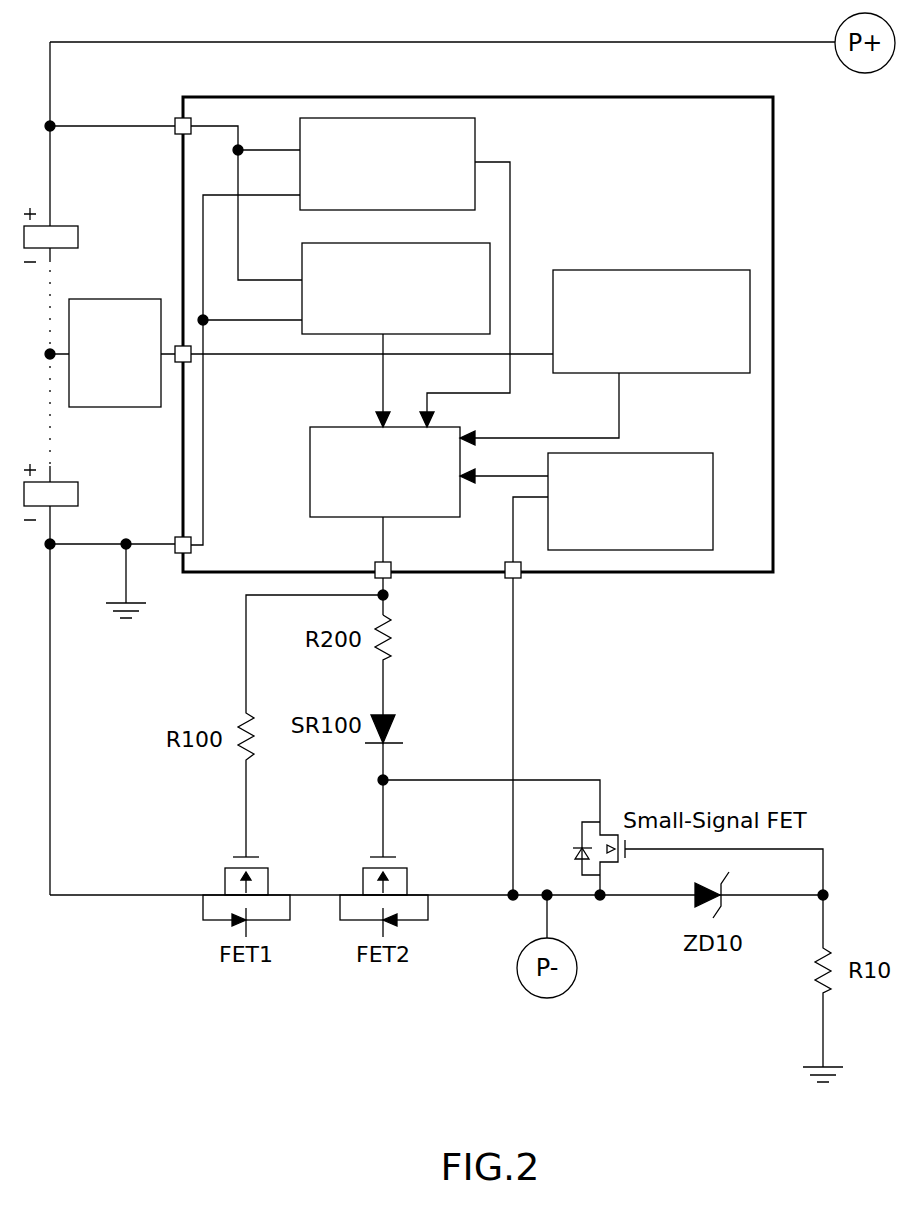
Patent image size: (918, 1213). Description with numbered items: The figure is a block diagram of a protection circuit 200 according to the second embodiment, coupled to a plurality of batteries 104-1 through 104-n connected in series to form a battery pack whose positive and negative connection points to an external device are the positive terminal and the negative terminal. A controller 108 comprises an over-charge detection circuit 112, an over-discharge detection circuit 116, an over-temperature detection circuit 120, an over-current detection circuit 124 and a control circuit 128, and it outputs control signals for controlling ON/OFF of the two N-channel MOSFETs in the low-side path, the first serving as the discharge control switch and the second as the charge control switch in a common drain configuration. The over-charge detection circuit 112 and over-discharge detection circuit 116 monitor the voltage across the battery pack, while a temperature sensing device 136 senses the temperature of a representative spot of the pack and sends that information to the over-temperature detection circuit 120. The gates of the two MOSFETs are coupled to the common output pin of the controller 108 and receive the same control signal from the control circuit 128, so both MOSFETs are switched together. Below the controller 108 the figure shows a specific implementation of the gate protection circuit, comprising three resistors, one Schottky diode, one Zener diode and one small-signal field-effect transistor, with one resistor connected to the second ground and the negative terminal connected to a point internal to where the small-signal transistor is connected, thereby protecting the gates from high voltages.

The battery 104-1 is at (58, 229).
The battery 104-n is at (58, 484).
The temperature sensing device 136 is at (76, 299).
The controller 108 is at (775, 300).
The over-charge detection circuit 112 is at (477, 146).
The over-discharge detection circuit 116 is at (492, 243).
The over-temperature detection circuit 120 is at (625, 270).
The over-current detection circuit 124 is at (660, 453).
The control circuit 128 is at (310, 470).
The protection circuit 200 is at (805, 701).